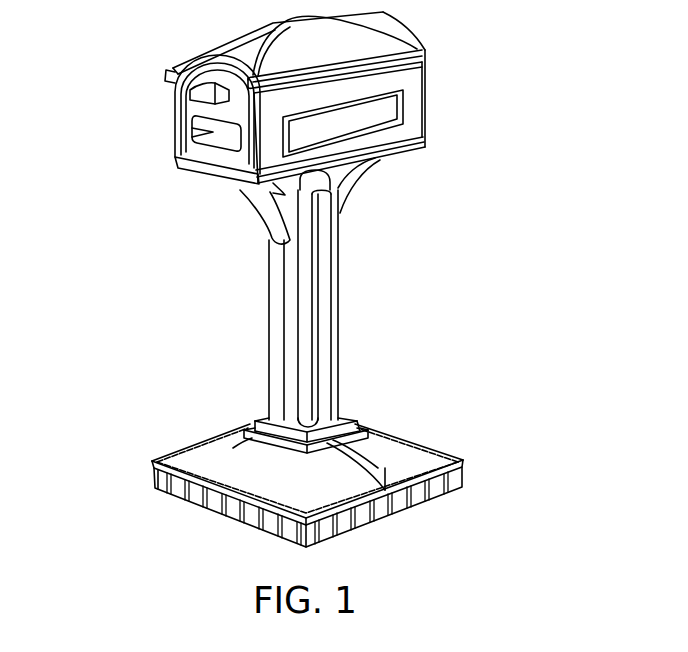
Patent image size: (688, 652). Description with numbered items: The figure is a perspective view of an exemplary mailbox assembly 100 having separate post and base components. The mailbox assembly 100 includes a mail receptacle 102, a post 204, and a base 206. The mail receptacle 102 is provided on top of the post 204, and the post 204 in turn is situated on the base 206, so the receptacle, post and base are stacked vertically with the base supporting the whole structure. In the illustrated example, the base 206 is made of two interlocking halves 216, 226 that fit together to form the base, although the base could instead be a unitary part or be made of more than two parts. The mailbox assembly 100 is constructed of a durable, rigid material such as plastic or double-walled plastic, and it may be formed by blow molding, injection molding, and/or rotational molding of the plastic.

The mailbox assembly 100 is at (540, 132).
The mail receptacle 102 is at (193, 108).
The post 204 is at (327, 260).
The base 206 is at (190, 364).
The interlocking half 216 is at (152, 474).
The interlocking half 226 is at (420, 462).